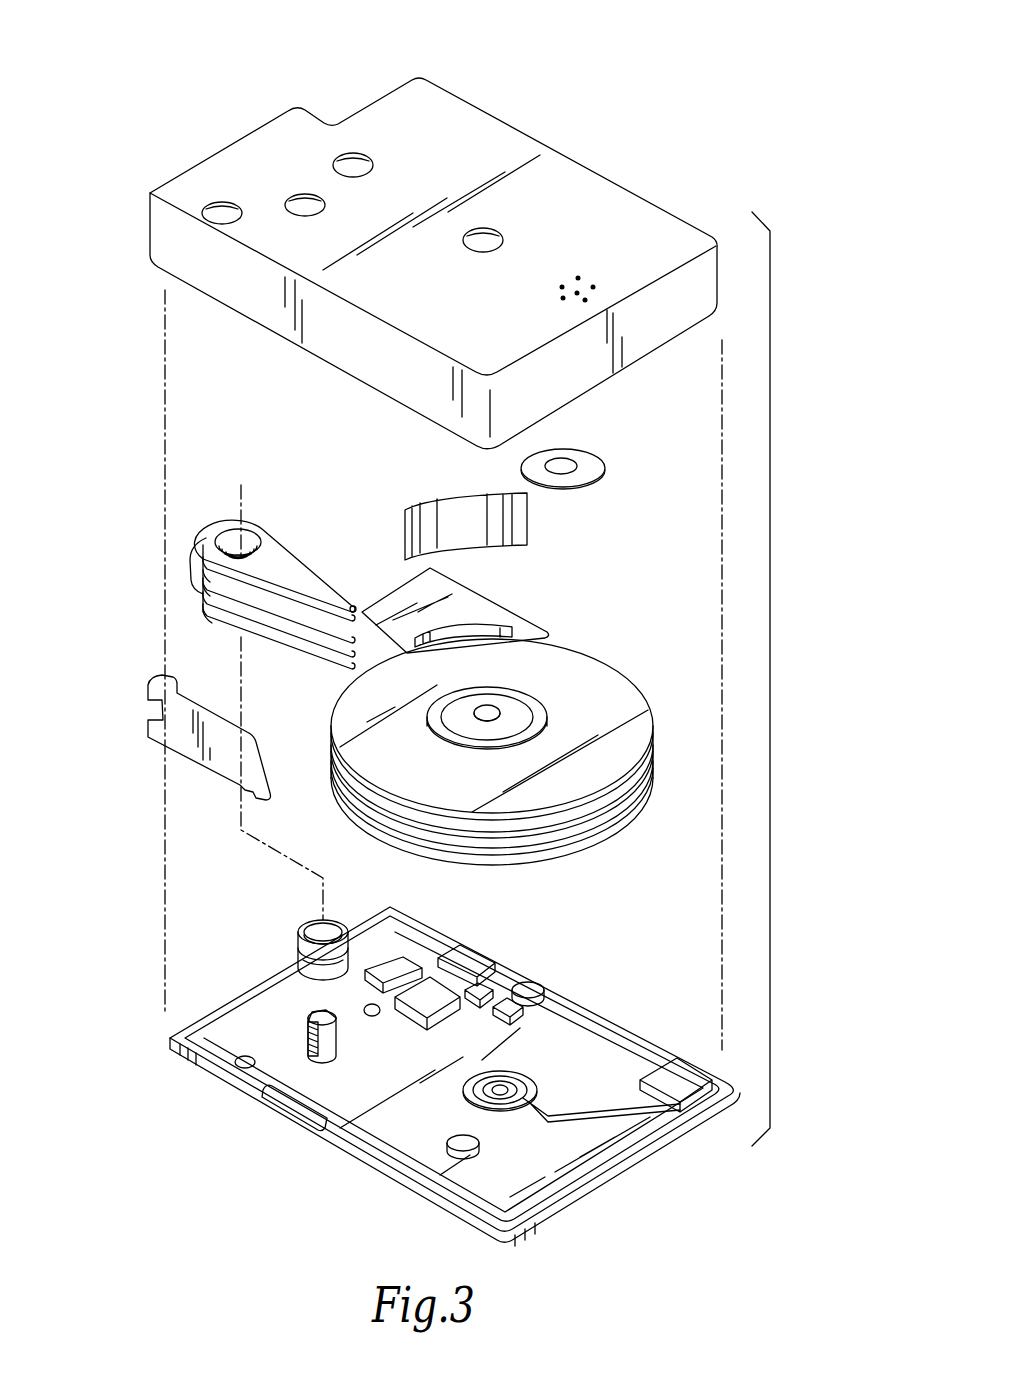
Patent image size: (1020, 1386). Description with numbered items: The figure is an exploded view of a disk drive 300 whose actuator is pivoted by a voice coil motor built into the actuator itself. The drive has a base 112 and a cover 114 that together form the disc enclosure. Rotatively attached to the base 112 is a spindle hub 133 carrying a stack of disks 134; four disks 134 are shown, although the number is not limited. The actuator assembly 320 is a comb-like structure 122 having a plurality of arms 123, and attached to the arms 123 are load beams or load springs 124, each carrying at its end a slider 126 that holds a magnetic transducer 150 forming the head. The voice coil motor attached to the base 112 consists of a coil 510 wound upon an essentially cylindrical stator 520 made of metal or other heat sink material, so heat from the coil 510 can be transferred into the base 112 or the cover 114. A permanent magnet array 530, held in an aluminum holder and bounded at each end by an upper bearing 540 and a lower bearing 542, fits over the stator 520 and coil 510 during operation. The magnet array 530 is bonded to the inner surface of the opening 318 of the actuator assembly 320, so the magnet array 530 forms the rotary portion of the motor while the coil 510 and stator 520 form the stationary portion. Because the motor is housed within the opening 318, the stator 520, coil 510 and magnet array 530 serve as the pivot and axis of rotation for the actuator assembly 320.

The disk drive 300 is at (578, 46).
The cover 114 is at (588, 192).
The base 112 is at (620, 1040).
The actuator assembly 320 is at (190, 589).
The opening 318 is at (235, 528).
The arms 123 is at (298, 553).
The load springs 124 is at (311, 580).
The comb-like structure 122 is at (256, 650).
The slider 126 is at (354, 605).
The transducer 150 is at (362, 610).
The spindle hub 133 is at (500, 722).
The disk 134 is at (620, 697).
The permanent magnet array 530 is at (300, 946).
The upper bearing 540 is at (300, 930).
The lower bearing 542 is at (300, 980).
The stator 520 is at (335, 1042).
The coil 510 is at (306, 1032).